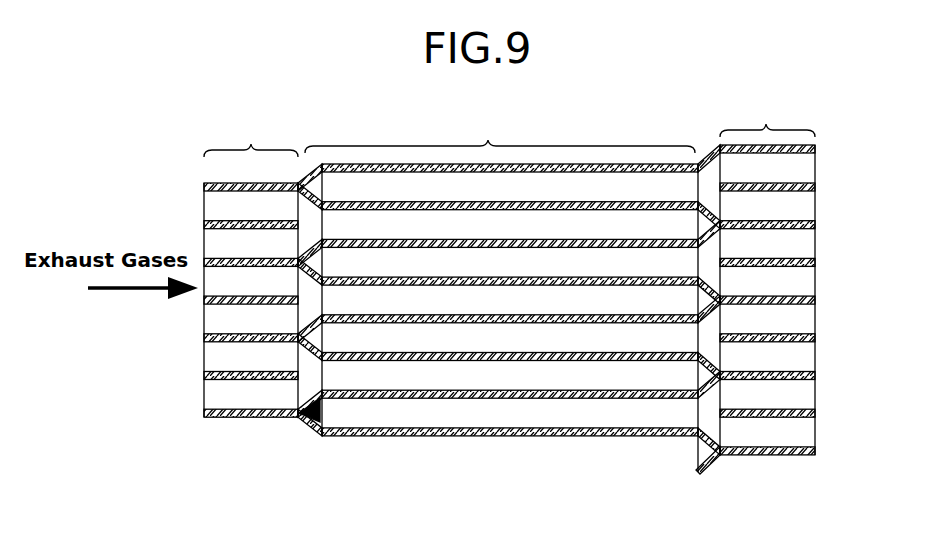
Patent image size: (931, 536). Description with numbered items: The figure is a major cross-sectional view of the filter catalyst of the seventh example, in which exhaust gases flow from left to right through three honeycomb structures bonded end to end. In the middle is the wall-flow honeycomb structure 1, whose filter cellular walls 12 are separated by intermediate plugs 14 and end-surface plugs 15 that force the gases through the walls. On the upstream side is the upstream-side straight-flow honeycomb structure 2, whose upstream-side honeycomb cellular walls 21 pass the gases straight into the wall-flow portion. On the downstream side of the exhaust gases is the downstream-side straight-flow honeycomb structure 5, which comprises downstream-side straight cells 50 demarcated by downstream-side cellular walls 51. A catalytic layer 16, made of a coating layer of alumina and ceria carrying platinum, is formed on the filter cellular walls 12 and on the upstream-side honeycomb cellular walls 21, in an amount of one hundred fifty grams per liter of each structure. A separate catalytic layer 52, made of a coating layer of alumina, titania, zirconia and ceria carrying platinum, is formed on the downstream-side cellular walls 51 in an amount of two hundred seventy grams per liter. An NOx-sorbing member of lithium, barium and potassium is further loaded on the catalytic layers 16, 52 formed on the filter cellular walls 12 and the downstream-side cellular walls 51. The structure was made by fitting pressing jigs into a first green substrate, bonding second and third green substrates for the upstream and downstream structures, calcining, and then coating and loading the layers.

The wall-flow honeycomb structure 1 is at (509, 292).
The upstream-side straight-flow honeycomb structure 2 is at (251, 262).
The downstream-side straight-flow honeycomb structure 5 is at (767, 274).
The filter cellular walls 12 is at (566, 398).
The intermediate plugs 14 is at (300, 398).
The end-surface plugs 15 is at (722, 378).
The catalytic layer 16 is at (160, 353).
The upstream-side honeycomb cellular walls 21 is at (240, 414).
The downstream-side straight cells 50 is at (786, 172).
The downstream-side cellular walls 51 is at (789, 263).
The catalytic layer 52 is at (840, 424).